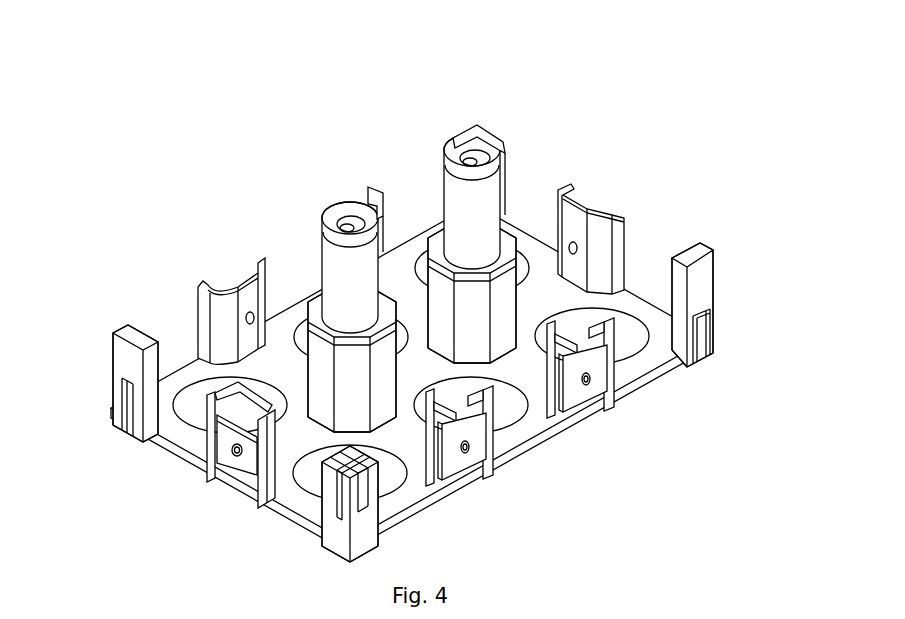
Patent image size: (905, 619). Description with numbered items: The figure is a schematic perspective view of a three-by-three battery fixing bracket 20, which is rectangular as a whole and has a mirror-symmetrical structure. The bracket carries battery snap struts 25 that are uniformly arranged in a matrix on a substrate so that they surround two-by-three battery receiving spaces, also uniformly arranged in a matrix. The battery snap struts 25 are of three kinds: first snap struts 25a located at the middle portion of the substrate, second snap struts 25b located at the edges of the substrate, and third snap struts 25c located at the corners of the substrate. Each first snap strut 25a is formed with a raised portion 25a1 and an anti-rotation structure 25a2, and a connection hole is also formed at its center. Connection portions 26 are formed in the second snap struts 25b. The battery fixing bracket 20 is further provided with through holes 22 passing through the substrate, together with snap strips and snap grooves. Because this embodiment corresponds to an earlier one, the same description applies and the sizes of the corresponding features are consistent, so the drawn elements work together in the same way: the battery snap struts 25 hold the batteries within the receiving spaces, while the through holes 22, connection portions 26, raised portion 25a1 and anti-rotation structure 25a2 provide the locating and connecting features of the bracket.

The battery fixing bracket 20 is at (416, 45).
The through hole 22 is at (630, 347).
The battery snap strut 25 is at (577, 52).
The first snap strut 25a is at (620, 237).
The raised portion 25a1 is at (340, 278).
The anti-rotation structure 25a2 is at (450, 148).
The second snap strut 25b is at (500, 300).
The third snap strut 25c is at (485, 133).
The connection portion 26 is at (587, 385).